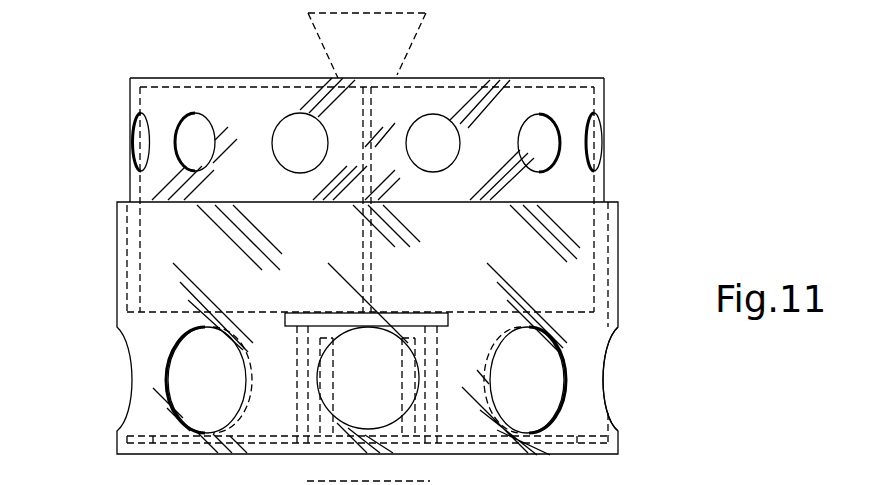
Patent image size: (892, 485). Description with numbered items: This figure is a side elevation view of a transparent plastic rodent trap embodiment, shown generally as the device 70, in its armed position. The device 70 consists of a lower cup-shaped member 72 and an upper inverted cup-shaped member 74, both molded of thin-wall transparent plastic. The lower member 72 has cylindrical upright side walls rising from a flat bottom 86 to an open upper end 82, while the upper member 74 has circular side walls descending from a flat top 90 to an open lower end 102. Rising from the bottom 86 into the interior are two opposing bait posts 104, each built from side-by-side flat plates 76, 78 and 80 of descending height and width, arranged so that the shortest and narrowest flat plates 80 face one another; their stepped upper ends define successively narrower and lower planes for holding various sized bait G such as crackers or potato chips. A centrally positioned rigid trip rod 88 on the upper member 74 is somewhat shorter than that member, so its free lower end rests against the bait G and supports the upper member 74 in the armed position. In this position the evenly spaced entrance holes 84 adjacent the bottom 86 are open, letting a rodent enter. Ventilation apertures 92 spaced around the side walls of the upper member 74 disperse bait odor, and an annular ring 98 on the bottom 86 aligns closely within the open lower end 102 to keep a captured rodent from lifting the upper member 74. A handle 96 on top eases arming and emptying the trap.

The device 70 is at (662, 258).
The lower cup-shaped member 72 is at (618, 218).
The upper inverted cup-shaped member 74 is at (604, 100).
The flat plate 76 is at (300, 410).
The flat plate 78 is at (342, 350).
The flat plate 80 is at (333, 377).
The open upper end 82 is at (143, 200).
The entrance holes 84 is at (603, 387).
The flat bottom 86 is at (588, 455).
The trip rod 88 is at (372, 107).
The flat top 90 is at (543, 78).
The ventilation apertures 92 is at (593, 140).
The handle 96 is at (318, 37).
The annular ring 98 is at (577, 425).
The open lower end 102 is at (603, 347).
The bait posts 104 is at (292, 385).
The bait G is at (418, 312).